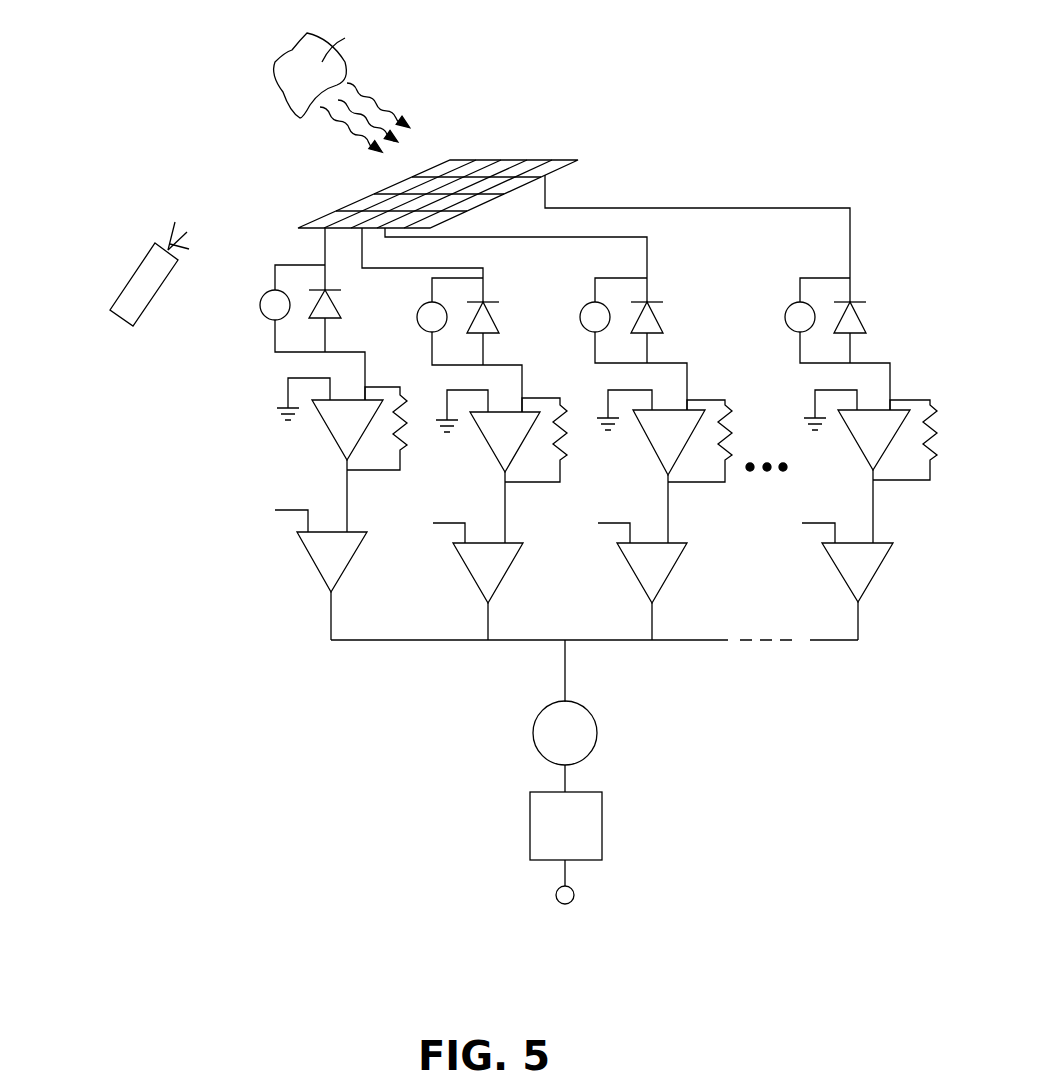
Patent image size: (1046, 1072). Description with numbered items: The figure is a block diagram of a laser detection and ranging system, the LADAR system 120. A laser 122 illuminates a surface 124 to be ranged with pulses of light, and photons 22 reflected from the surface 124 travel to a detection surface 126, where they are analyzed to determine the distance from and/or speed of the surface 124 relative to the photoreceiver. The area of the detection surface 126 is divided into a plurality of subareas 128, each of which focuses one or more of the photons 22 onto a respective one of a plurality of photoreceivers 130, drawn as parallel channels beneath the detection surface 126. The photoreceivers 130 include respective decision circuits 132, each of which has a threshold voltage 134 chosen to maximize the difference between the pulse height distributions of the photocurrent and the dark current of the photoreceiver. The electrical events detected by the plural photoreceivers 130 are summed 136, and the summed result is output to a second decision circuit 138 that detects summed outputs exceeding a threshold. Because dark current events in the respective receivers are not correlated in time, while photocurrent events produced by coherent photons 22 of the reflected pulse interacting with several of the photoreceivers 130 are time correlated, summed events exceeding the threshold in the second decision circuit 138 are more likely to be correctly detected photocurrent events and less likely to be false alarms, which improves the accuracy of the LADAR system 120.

The photons 22 is at (390, 98).
The LADAR system 120 is at (305, 702).
The laser 122 is at (138, 272).
The surface 124 is at (322, 62).
The detection surface 126 is at (480, 124).
The subareas 128 is at (520, 158).
The photoreceivers 130 is at (238, 345).
The decision circuits 132 is at (272, 455).
The threshold voltage 134 is at (256, 530).
The summing 136 is at (597, 717).
The second decision circuit 138 is at (602, 812).